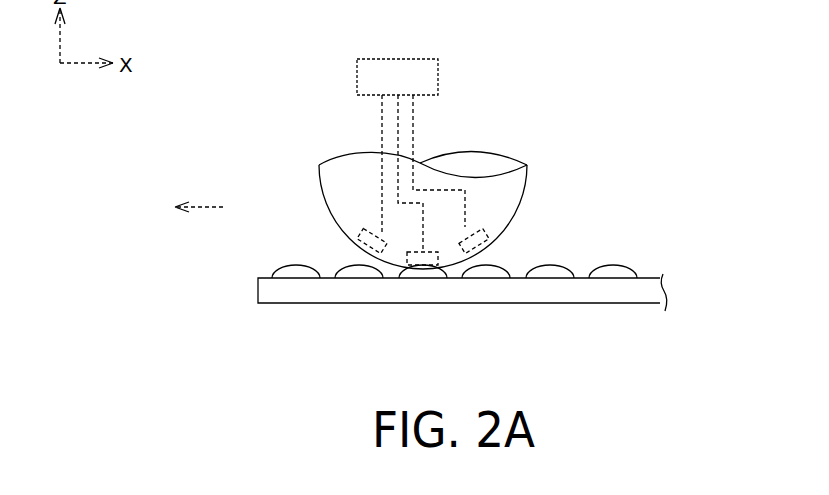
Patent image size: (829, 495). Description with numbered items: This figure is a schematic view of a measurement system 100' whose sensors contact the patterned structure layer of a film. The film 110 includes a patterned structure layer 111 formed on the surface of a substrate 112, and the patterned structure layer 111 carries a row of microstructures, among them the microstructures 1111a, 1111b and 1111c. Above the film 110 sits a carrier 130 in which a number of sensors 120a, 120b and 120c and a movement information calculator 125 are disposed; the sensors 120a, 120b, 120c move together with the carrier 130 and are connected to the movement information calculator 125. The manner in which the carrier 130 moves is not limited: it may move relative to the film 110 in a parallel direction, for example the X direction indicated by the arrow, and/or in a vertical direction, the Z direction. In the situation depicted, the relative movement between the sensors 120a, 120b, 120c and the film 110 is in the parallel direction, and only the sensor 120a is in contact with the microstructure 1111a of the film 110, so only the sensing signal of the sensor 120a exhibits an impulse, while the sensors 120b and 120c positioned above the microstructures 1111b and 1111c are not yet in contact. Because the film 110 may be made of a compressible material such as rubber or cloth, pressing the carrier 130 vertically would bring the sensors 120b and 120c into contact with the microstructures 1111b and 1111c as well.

The measurement system 100' is at (450, 185).
The film 110 is at (615, 303).
The patterned structure layer 111 is at (258, 278).
The microstructure 1111a is at (428, 270).
The microstructure 1111b is at (495, 273).
The microstructure 1111c is at (353, 273).
The substrate 112 is at (652, 291).
The sensor 120a is at (413, 250).
The sensor 120b is at (478, 230).
The sensor 120c is at (367, 228).
The movement information calculator 125 is at (418, 89).
The carrier 130 is at (527, 182).